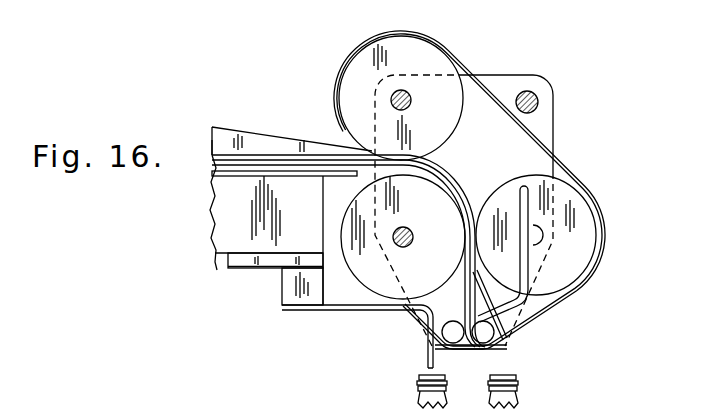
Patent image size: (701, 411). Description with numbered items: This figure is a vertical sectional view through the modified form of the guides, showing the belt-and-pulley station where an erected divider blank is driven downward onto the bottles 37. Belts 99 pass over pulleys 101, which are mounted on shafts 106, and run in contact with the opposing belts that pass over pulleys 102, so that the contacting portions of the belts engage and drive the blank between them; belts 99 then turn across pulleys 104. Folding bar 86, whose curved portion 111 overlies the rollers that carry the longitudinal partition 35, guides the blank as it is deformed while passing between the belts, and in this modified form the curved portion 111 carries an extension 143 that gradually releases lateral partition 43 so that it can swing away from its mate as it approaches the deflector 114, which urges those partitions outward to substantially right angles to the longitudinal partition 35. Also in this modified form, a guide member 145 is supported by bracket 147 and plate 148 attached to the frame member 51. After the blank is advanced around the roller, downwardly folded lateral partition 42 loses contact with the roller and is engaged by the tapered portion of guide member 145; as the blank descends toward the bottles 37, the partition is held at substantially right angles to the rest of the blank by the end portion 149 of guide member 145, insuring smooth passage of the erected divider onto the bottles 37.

The moving belts 99 is at (487, 92).
The pulleys 101 is at (447, 113).
The pulleys 102 is at (453, 248).
The pulleys 104 is at (587, 258).
The shafts 106 is at (405, 96).
The curved portions 111 is at (463, 176).
The folding bars 86 is at (282, 155).
The frame members 51 is at (227, 220).
The plates 148 is at (228, 263).
The brackets 147 is at (288, 283).
The guide members 145 is at (337, 308).
The end portions 149 is at (428, 350).
The extensions 143 is at (513, 318).
The deflector 114 is at (508, 347).
The bottles 37 is at (521, 402).
The lateral partition 43 is at (221, 402).
The longitudinal partition 35 is at (281, 399).
The lateral partition 42 is at (325, 403).